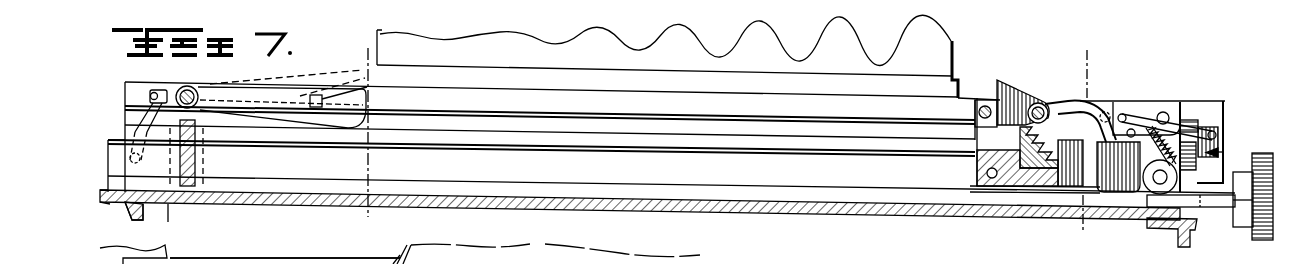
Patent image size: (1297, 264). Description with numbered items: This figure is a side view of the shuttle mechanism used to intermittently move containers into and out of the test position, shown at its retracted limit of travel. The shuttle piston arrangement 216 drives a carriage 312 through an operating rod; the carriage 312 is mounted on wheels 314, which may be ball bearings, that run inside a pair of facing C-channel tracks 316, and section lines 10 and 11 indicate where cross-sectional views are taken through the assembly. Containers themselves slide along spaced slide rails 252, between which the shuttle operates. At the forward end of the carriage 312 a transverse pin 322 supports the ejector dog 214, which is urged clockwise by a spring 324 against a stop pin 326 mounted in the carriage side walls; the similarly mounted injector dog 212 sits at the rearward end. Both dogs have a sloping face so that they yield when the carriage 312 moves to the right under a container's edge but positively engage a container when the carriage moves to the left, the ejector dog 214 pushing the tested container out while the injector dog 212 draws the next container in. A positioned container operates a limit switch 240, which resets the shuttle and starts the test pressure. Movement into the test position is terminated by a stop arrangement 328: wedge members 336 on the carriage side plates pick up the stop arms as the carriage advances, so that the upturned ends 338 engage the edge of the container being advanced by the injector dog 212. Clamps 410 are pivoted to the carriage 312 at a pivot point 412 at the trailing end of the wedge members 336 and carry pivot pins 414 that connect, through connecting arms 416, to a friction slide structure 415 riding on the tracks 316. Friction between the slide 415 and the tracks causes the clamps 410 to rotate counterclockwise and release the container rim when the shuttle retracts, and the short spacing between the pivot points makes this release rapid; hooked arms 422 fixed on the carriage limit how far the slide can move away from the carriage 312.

The section line 10- 10 is at (1100, 70).
The section line 11- 11 is at (360, 53).
The injector dog 212 is at (1124, 116).
The ejector dog 214 is at (1010, 80).
The shuttle piston arrangement 216 is at (1245, 228).
The limit switch 240 is at (130, 165).
The slide rails 252 is at (217, 258).
The carriage 312 is at (1073, 188).
The wheels 314 is at (975, 181).
The tracks 316 is at (803, 173).
The transverse pin 322 is at (1045, 102).
The spring 324 is at (1027, 190).
The stop pin 326 is at (975, 104).
The stop arrangement 328 is at (258, 80).
The wedge members 336 is at (1118, 195).
The upturned ends 338 is at (368, 99).
The clamps 410 is at (1100, 101).
The pivot point 412 is at (1132, 192).
The pivot pins 414 is at (1135, 110).
The friction slide structure 415 is at (1222, 152).
The connecting arms 416 is at (1182, 126).
The hooked arms 422 is at (1208, 128).